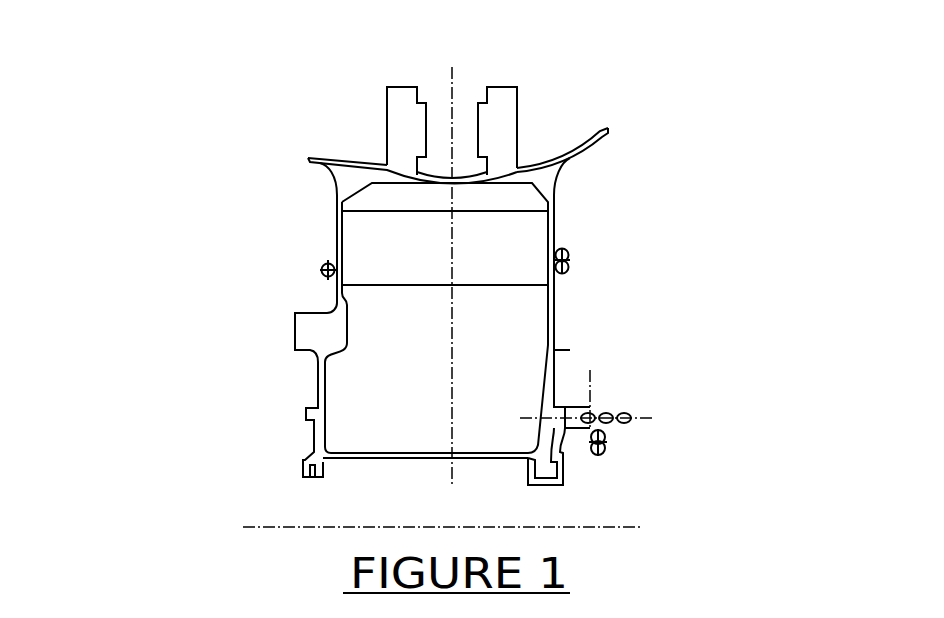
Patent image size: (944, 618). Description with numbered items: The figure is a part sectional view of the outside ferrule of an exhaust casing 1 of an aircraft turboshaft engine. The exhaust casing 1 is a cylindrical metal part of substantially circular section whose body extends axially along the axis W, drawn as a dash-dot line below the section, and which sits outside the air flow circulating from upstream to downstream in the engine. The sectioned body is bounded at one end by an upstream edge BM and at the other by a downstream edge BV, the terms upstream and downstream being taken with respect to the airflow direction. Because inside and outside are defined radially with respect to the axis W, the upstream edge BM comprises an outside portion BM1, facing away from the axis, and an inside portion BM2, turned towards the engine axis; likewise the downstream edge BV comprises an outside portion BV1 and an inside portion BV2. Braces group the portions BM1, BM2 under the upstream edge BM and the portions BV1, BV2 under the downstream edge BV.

The exhaust casing 1 is at (456, 251).
The upstream edge BM is at (280, 115).
The outside portion of the upstream edge BM1 is at (316, 150).
The inside portion of the upstream edge BM2 is at (306, 169).
The downstream edge BV is at (693, 93).
The outside portion of the downstream edge BV1 is at (596, 124).
The inside portion of the downstream edge BV2 is at (605, 143).
The axis W is at (430, 524).